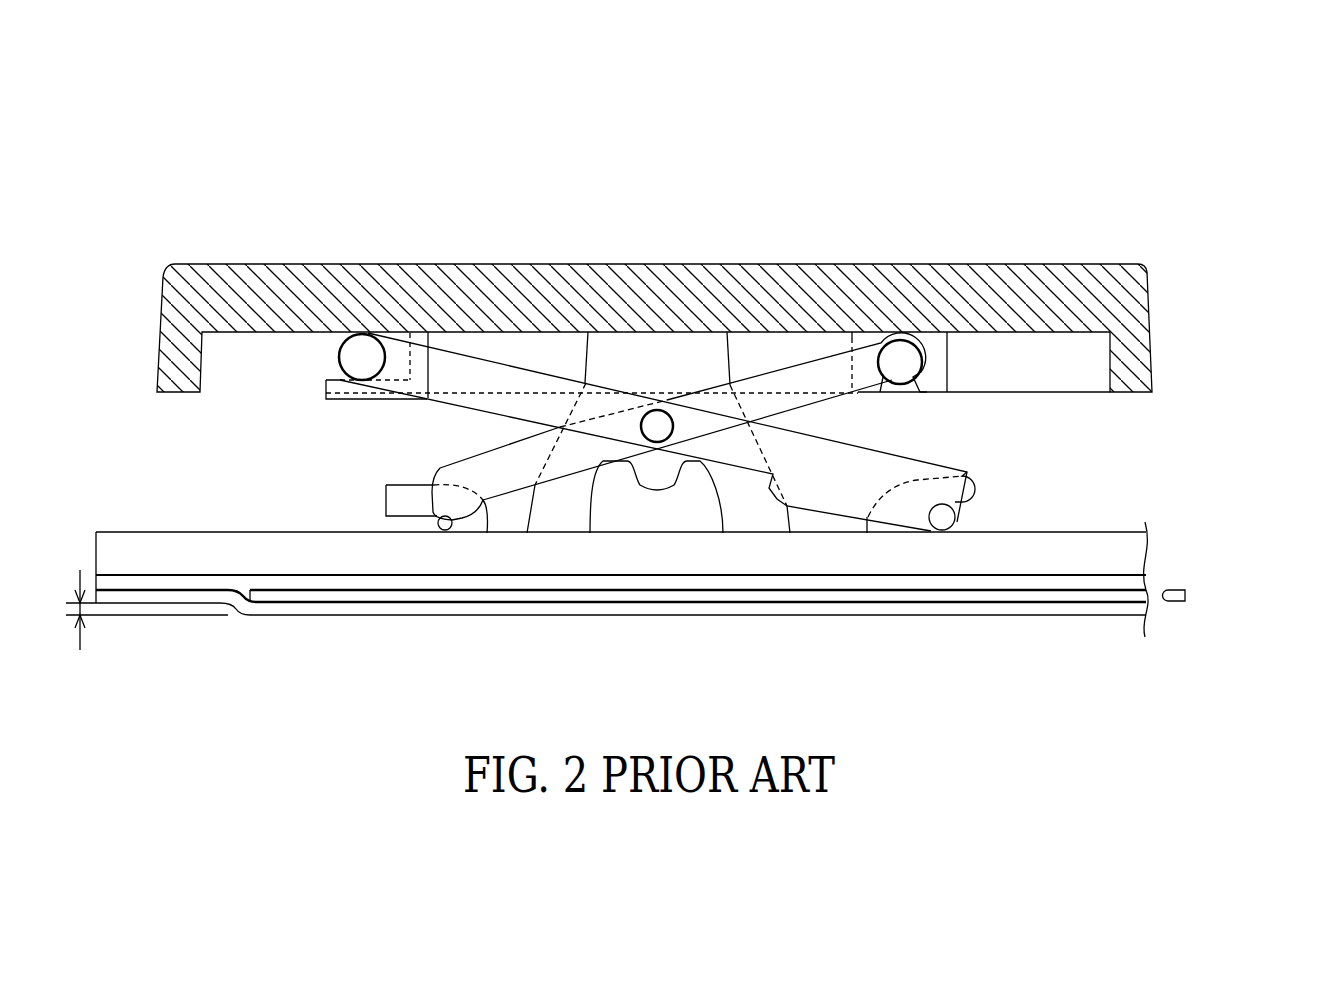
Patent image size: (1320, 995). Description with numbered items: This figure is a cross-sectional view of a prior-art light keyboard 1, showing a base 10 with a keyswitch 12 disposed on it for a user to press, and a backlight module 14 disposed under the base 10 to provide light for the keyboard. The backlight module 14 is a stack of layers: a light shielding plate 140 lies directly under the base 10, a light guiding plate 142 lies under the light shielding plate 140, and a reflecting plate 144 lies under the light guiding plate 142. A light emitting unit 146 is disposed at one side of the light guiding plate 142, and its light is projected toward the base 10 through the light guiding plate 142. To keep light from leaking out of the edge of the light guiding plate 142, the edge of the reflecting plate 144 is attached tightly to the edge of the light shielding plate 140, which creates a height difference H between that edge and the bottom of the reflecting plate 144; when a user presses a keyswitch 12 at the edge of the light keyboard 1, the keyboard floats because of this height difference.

The light keyboard 1 is at (1090, 110).
The keyswitch 12 is at (915, 195).
The base 10 is at (1103, 543).
The backlight module 14 is at (1243, 497).
The light shielding plate 140 is at (1135, 583).
The light guiding plate 142 is at (1147, 593).
The reflecting plate 144 is at (1145, 607).
The light emitting unit 146 is at (1187, 595).